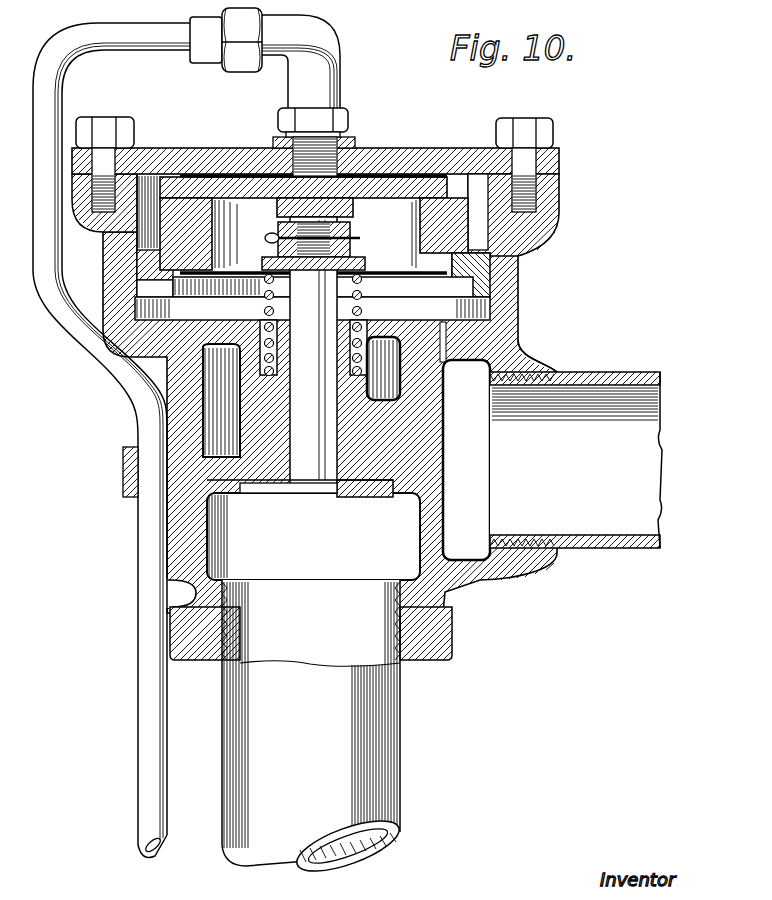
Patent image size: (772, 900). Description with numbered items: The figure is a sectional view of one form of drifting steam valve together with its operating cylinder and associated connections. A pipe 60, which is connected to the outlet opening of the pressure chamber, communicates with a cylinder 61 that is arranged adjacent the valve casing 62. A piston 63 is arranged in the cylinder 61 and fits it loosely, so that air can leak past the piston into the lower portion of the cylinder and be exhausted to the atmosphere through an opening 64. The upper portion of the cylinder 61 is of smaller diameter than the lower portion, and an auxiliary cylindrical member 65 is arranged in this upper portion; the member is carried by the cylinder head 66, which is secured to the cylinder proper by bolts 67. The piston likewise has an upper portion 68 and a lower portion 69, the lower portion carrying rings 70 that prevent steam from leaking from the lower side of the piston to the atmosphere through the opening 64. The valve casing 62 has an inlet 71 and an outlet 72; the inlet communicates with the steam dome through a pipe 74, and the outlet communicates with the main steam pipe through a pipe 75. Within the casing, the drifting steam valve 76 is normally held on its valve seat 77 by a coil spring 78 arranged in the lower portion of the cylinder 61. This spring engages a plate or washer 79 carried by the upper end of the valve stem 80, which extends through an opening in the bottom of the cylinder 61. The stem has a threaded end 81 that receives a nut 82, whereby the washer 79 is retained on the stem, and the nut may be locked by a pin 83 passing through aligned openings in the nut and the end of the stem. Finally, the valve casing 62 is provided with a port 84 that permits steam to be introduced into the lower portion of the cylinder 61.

The pipe 60 is at (137, 736).
The cylinder 61 is at (521, 272).
The valve casing 62 is at (538, 357).
The piston 63 is at (406, 186).
The opening 64 is at (108, 234).
The auxiliary cylindrical member 65 is at (529, 237).
The cylinder head 66 is at (461, 160).
The bolts 67 is at (104, 126).
The upper portion of the piston 68 is at (438, 277).
The lower portion of the piston 69 is at (484, 289).
The rings 70 is at (432, 298).
The inlet 71 is at (313, 536).
The outlet 72 is at (466, 460).
The pipe 74 is at (401, 738).
The pipe 75 is at (637, 372).
The drifting steam valve 76 is at (360, 482).
The valve seat 77 is at (386, 490).
The coil spring 78 is at (386, 382).
The plate or washer 79 is at (366, 262).
The valve stem 80 is at (338, 436).
The threaded end 81 is at (270, 236).
The nut 82 is at (347, 226).
The pin 83 is at (353, 239).
The port 84 is at (443, 362).